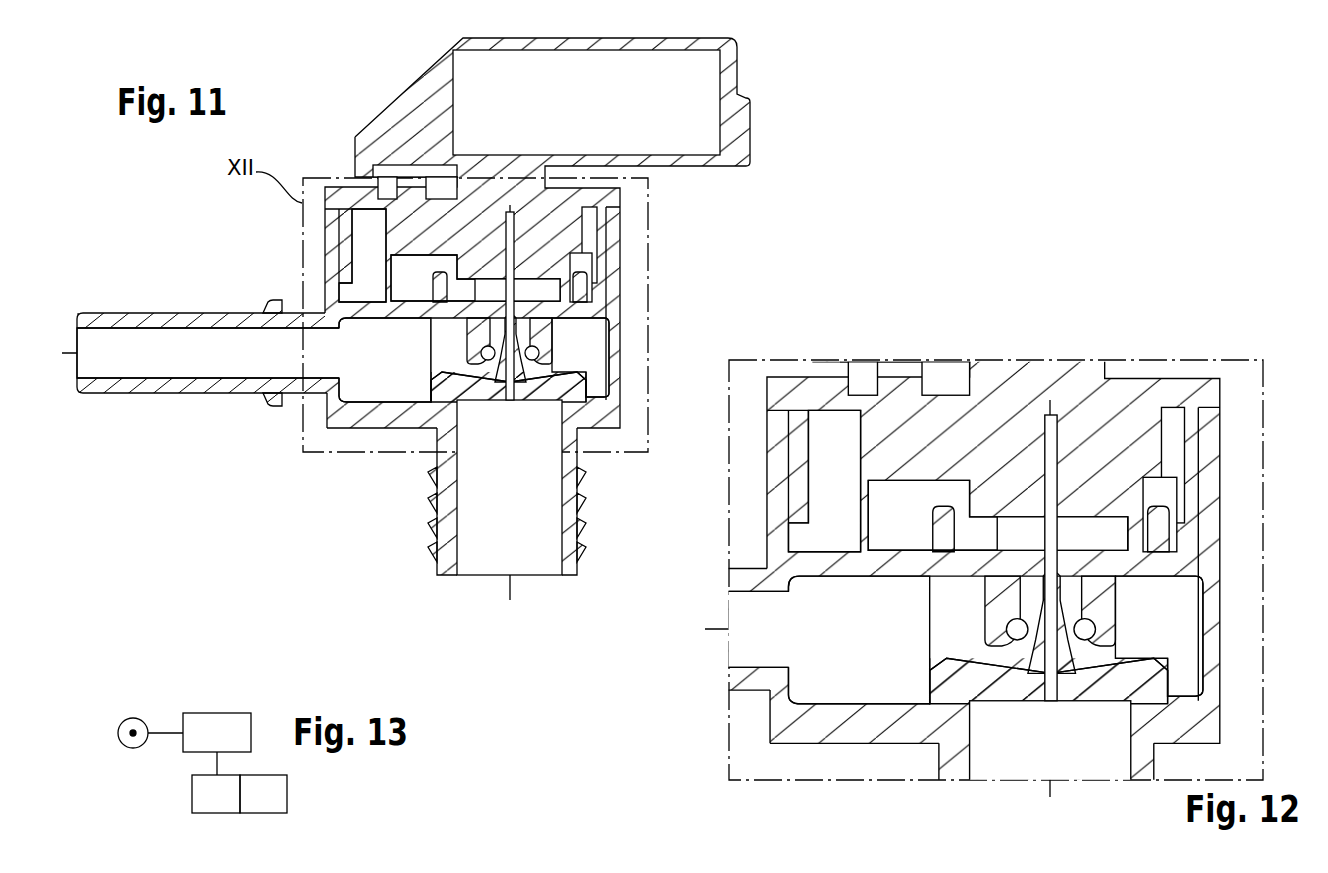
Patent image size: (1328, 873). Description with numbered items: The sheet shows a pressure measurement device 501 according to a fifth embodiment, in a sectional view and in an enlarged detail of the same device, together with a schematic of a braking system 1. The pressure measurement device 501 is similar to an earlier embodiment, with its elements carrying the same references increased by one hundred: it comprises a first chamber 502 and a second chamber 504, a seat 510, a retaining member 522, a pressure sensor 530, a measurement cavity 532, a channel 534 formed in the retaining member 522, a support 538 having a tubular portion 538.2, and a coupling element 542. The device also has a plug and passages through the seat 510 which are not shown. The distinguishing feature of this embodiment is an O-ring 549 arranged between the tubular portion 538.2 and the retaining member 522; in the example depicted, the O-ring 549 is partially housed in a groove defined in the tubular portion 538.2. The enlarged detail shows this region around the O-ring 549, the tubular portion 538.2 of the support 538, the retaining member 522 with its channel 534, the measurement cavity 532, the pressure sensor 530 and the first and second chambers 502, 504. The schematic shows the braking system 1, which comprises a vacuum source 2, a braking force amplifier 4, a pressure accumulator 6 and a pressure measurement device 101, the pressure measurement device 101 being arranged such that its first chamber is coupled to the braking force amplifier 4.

In FIG. 11, the pressure measurement device 501 is at (190, 206).
In FIG. 11, the support 538 is at (358, 200).
In FIG. 12, the support 538 is at (830, 370).
In FIG. 11, the second chamber 504 is at (355, 339).
In FIG. 12, the second chamber 504 is at (798, 607).
In FIG. 11, the pressure sensor 530 is at (534, 270).
In FIG. 12, the pressure sensor 530 is at (1085, 495).
In FIG. 11, the measurement cavity 532 is at (532, 292).
In FIG. 12, the measurement cavity 532 is at (1030, 530).
In FIG. 11, the O-ring 549 is at (538, 352).
In FIG. 12, the O-ring 549 is at (1083, 628).
In FIG. 11, the seat 510 is at (553, 388).
In FIG. 11, the retaining member 522 is at (500, 370).
In FIG. 11, the channel 534 is at (512, 406).
In FIG. 12, the channel 534 is at (1050, 705).
In FIG. 11, the coupling element 542 is at (440, 508).
In FIG. 11, the first chamber 502 is at (492, 533).
In FIG. 12, the first chamber 502 is at (1008, 750).
In FIG. 12, the tubular portion 538.2 is at (1098, 595).
In FIG. 13, the braking system 1 is at (164, 673).
In FIG. 13, the vacuum source 2 is at (122, 722).
In FIG. 13, the pressure measurement device 101 is at (217, 732).
In FIG. 13, the braking force amplifier 4 is at (216, 794).
In FIG. 13, the pressure accumulator 6 is at (263, 794).